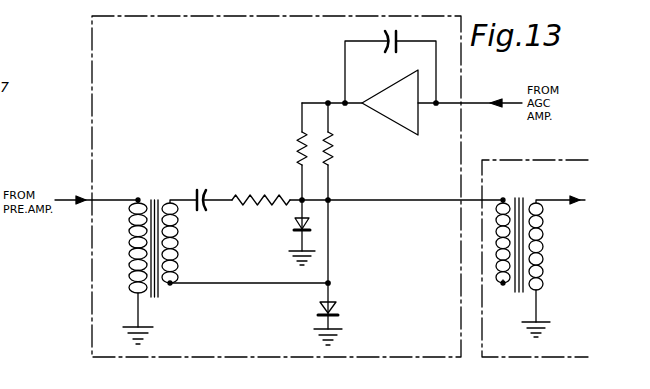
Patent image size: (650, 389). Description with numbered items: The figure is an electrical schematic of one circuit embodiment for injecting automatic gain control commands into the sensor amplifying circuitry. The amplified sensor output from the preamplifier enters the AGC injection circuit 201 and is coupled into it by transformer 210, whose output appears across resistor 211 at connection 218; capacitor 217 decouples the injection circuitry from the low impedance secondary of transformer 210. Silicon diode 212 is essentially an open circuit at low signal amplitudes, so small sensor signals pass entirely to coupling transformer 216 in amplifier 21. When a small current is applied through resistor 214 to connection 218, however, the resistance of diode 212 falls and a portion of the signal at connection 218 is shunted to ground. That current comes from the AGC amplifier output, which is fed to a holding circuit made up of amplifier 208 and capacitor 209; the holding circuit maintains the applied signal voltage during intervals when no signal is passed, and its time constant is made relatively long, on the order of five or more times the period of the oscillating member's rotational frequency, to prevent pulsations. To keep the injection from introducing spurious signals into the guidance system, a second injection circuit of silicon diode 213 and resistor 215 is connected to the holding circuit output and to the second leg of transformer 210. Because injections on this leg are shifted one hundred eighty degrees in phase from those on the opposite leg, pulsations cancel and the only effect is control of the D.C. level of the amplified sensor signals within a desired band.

The AGC injection circuit 201 is at (92, 44).
The amplifier 21 is at (507, 358).
The amplifier 208 is at (395, 122).
The capacitor 209 is at (384, 38).
The transformer 210 is at (155, 295).
The resistor 211 is at (270, 184).
The silicon diode 212 is at (297, 227).
The silicon diode 213 is at (338, 307).
The resistor 214 is at (298, 150).
The resistor 215 is at (332, 148).
The coupling transformer 216 is at (521, 197).
The capacitor 217 is at (201, 188).
The connection 218 is at (305, 198).